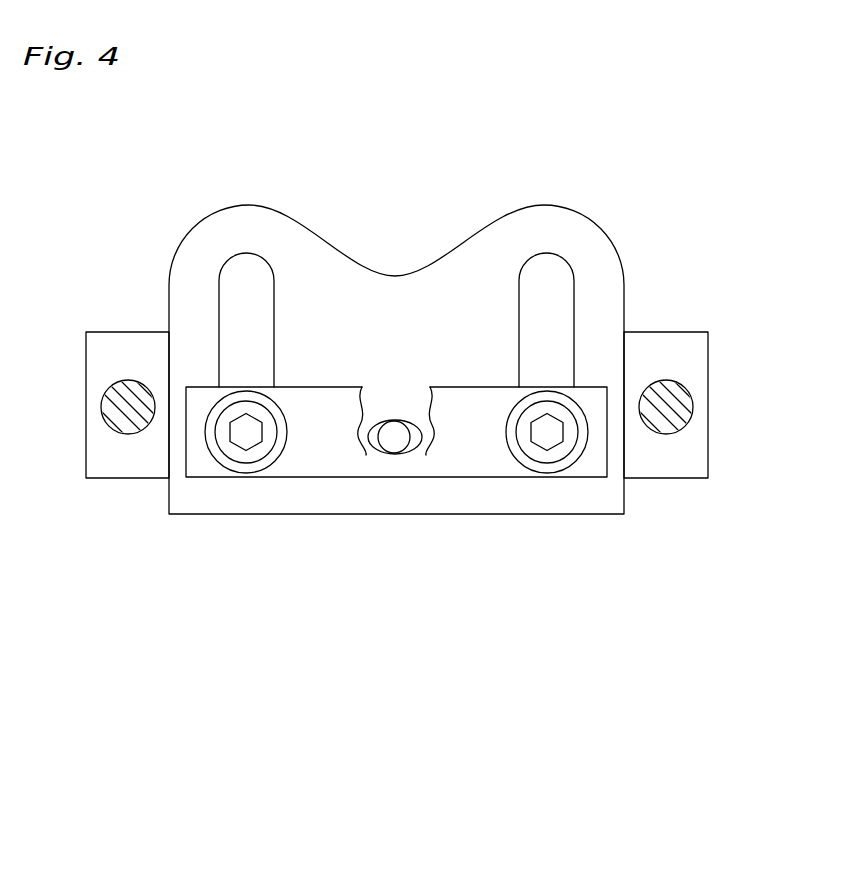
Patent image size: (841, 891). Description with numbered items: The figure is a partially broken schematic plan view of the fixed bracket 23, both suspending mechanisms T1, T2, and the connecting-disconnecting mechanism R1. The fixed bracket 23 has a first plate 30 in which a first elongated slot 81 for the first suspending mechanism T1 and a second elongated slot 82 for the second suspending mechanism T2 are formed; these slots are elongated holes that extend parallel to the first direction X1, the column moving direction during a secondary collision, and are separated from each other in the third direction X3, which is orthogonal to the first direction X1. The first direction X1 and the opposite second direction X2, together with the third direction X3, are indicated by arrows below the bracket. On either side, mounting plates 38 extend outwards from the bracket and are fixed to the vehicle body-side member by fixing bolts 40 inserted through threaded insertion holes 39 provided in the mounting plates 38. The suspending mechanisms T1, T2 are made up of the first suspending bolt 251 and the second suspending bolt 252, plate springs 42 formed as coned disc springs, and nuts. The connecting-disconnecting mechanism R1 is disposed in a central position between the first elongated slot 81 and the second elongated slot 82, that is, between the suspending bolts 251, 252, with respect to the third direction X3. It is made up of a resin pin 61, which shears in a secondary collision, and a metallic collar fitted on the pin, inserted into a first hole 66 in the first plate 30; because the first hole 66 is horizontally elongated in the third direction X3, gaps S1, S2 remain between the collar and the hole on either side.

The fixed bracket 23 is at (627, 303).
The first plate 30 is at (383, 287).
The first elongated slot 81 is at (246, 270).
The second elongated slot 82 is at (548, 270).
The mounting plate 38 is at (96, 358).
The threaded insertion hole 39 is at (112, 398).
The fixing bolt 40 is at (127, 418).
The plate spring 42 is at (218, 455).
The first suspending bolt 251 is at (234, 463).
The second suspending bolt 252 is at (558, 463).
The first suspending mechanism T1 is at (274, 472).
The second suspending mechanism T2 is at (520, 472).
The gap S1 is at (374, 420).
The gap S2 is at (416, 420).
The resin pin 61 is at (385, 438).
The first hole 66 is at (418, 448).
The connecting-disconnecting mechanism R1 is at (394, 455).
The first direction X1 is at (409, 595).
The second direction X2 is at (382, 593).
The third direction X3 is at (433, 697).